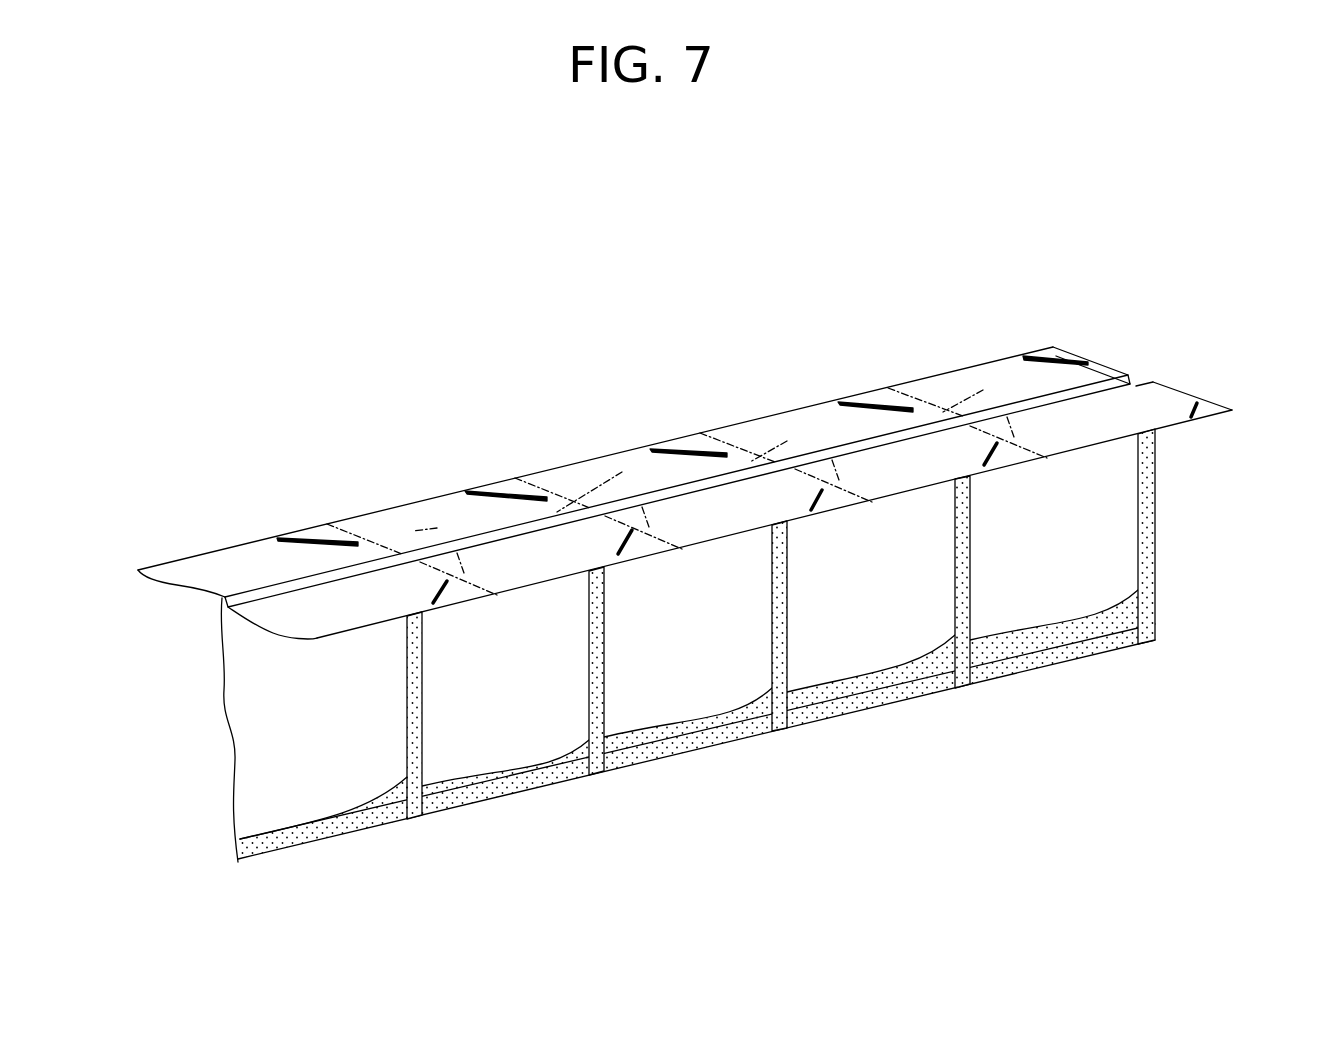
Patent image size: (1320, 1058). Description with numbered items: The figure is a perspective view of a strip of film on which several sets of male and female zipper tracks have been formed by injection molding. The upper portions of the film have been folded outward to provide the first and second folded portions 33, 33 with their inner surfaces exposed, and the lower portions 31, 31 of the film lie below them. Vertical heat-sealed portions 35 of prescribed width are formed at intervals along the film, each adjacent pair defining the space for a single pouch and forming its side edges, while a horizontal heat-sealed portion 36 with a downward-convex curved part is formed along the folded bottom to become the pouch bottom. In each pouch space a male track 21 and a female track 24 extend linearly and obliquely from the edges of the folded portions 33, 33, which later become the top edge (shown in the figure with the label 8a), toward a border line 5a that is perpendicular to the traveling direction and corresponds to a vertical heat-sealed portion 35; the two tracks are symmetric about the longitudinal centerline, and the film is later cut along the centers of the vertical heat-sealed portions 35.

The border line 5a is at (393, 545).
The plate 8a is at (250, 538).
The male track 21 is at (317, 537).
The female track 24 is at (437, 582).
The portion of the strip of film 31 is at (315, 713).
The folded portion 33 is at (193, 567).
The vertical heat-sealed portion 35 is at (422, 707).
The horizontal heat-sealed portion 36 is at (302, 840).